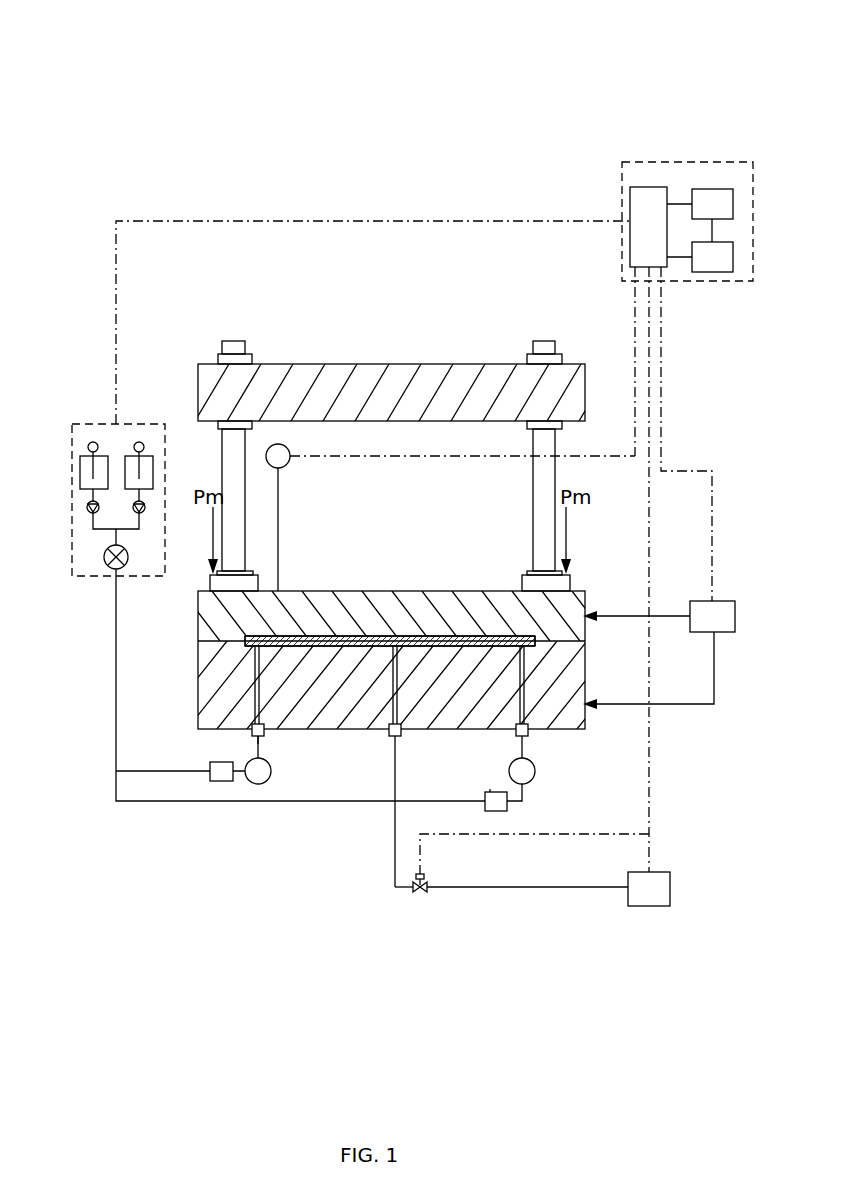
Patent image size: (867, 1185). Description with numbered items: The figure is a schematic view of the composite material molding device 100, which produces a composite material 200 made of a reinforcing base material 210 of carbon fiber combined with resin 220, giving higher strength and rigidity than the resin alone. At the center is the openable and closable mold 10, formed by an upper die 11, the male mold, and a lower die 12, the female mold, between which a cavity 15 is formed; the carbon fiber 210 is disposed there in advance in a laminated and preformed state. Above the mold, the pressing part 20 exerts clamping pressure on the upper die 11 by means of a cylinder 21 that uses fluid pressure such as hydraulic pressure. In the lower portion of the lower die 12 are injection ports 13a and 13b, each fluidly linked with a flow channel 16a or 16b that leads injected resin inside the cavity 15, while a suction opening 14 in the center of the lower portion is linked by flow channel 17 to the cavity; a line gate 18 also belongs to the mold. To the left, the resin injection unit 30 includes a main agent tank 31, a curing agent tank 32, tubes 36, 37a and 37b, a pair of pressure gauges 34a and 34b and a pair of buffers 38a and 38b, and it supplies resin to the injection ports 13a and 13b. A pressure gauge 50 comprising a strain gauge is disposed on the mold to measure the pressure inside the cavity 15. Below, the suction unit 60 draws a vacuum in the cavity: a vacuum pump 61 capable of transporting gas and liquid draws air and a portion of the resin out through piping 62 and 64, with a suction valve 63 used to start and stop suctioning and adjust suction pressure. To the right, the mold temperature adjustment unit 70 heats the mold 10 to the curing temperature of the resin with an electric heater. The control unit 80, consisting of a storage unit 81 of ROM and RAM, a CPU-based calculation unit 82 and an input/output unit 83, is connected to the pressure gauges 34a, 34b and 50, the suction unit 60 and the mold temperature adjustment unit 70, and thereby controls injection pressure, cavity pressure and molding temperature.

The molding device 100 is at (148, 38).
The mold 10 is at (157, 612).
The upper die 11 is at (212, 628).
The lower die 12 is at (212, 657).
The injection port 13a is at (264, 738).
The injection port 13b is at (528, 738).
The suction opening 14 is at (399, 741).
The cavity 15 is at (440, 637).
The flow channel 16a is at (256, 712).
The flow channel 16b is at (524, 690).
The flow channel 17 is at (410, 688).
The line gate 18 is at (256, 640).
The pressing part 20 is at (398, 364).
The cylinder 21 is at (225, 443).
The resin injection unit 30 is at (64, 461).
The main agent tank 31 is at (88, 442).
The curing agent tank 32 is at (141, 442).
The pressure gauge 34a is at (271, 773).
The pressure gauge 34b is at (535, 773).
The tube 36 is at (116, 742).
The tube 37a is at (258, 745).
The tube 37b is at (522, 800).
The buffer 38a is at (223, 782).
The buffer 38b is at (492, 793).
The pressure gauge 50 is at (291, 455).
The suction unit 60 is at (615, 942).
The pump 61 is at (632, 885).
The piping 62 is at (398, 892).
The suction valve 63 is at (428, 894).
The piping 64 is at (530, 890).
The mold temperature adjustment unit 70 is at (735, 615).
The control unit 80 is at (690, 163).
The storage unit 81 is at (733, 205).
The calculation unit 82 is at (733, 258).
The input/output unit 83 is at (632, 192).
The composite material 200 is at (378, 538).
The reinforcing base material 210 is at (352, 637).
The resin 220 is at (307, 637).